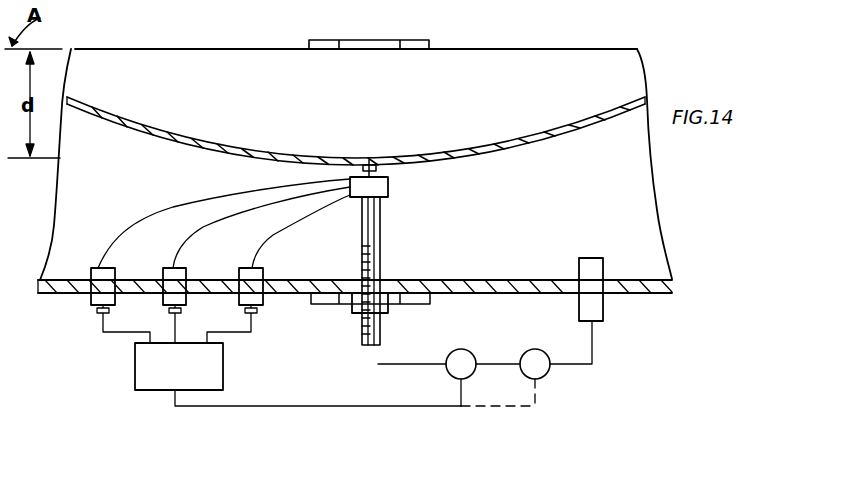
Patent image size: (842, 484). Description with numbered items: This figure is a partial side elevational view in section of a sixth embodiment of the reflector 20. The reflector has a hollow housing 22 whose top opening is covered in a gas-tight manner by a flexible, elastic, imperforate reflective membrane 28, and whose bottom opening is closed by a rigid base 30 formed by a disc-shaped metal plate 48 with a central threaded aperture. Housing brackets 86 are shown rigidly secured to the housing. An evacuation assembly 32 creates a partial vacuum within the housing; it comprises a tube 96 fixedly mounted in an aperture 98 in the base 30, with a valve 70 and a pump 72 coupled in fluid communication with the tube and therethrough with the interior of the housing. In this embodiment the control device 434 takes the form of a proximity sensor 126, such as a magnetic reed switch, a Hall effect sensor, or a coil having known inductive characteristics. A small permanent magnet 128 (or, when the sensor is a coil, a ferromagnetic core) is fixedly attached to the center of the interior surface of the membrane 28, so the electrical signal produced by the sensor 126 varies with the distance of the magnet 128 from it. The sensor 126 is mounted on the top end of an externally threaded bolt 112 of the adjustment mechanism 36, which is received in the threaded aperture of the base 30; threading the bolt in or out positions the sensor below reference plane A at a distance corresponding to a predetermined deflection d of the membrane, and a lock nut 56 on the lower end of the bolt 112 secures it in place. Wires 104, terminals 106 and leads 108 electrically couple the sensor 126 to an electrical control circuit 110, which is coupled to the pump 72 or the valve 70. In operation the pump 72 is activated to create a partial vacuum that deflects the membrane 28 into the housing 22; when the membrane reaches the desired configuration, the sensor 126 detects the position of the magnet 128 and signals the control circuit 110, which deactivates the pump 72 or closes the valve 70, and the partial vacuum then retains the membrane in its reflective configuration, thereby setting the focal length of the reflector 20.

The reflector 20 is at (648, 68).
The hollow housing 22 is at (630, 186).
The reflective membrane 28 is at (434, 147).
The base 30 is at (653, 295).
The evacuation assembly 32 is at (503, 386).
The adjustment mechanism 36 is at (381, 263).
The metal plate 48 is at (55, 296).
The lock nut 56 is at (357, 305).
The valve 70 is at (557, 332).
The pump 72 is at (485, 332).
The housing bracket 86 is at (391, 12).
The tube 96 is at (597, 290).
The aperture 98 is at (585, 280).
The wires 104 is at (200, 231).
The terminals 106 is at (167, 277).
The leads 108 is at (100, 324).
The electrical control circuit 110 is at (148, 366).
The bolt 112 is at (362, 226).
The proximity sensor 126 is at (390, 191).
The permanent magnet 128 is at (378, 166).
The control device 434 is at (383, 199).